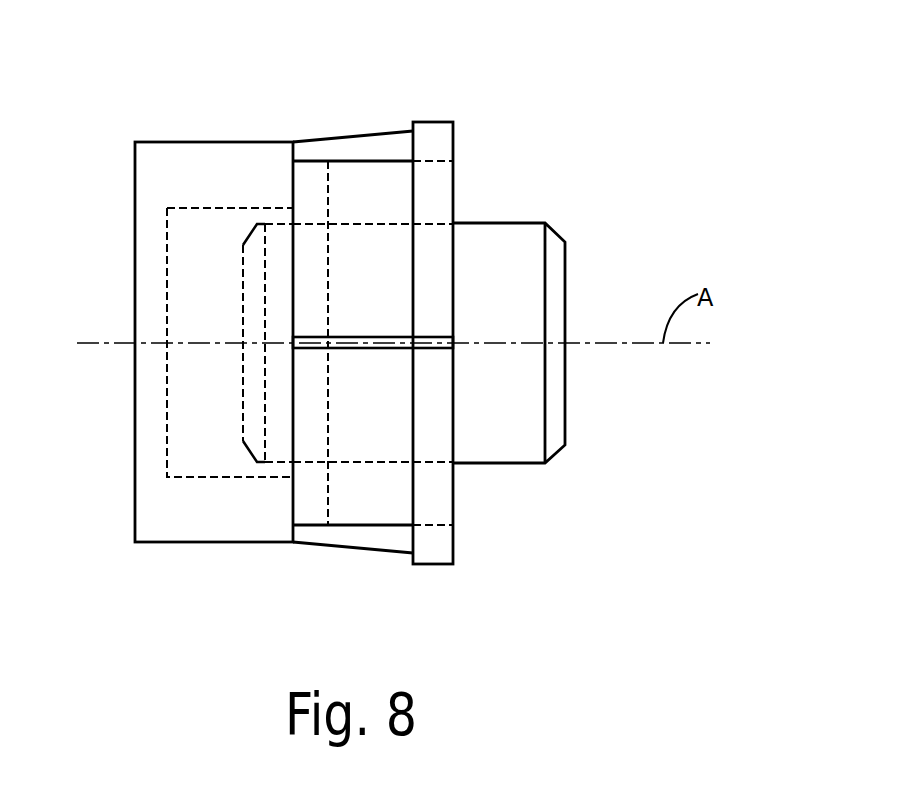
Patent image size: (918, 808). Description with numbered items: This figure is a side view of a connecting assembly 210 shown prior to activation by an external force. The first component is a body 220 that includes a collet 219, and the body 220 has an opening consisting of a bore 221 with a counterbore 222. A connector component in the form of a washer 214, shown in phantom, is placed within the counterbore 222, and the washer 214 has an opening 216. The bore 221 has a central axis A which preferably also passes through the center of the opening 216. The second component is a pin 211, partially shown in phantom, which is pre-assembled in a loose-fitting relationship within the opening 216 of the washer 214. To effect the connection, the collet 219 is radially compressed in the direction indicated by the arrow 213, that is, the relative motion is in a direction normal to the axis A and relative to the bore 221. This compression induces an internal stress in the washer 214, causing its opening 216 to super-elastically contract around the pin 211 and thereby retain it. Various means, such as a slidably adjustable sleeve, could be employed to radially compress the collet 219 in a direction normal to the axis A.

The connecting assembly 210 is at (450, 330).
The pin 211 is at (530, 418).
The arrow 213 is at (435, 85).
The washer 214 is at (322, 497).
The opening 216 is at (293, 215).
The collet 219 is at (343, 535).
The body 220 is at (153, 187).
The bore 221 is at (207, 212).
The counterbore 222 is at (370, 163).